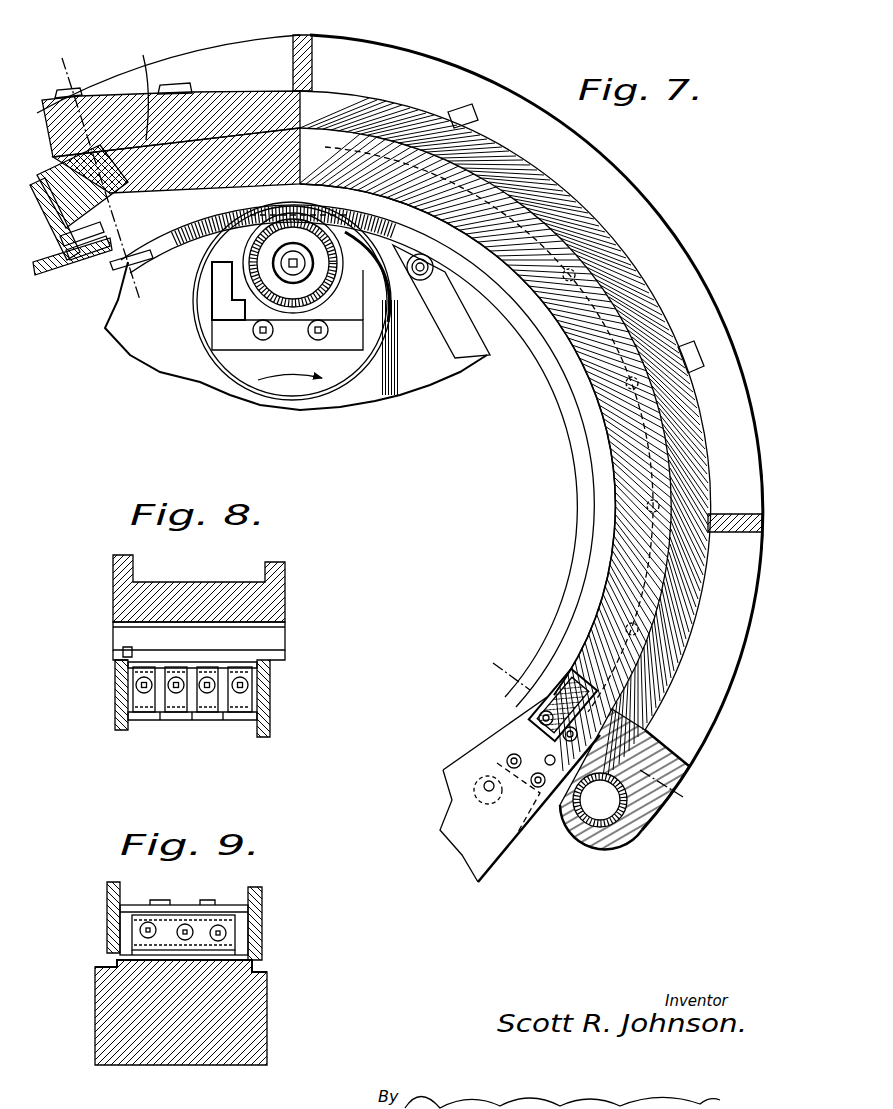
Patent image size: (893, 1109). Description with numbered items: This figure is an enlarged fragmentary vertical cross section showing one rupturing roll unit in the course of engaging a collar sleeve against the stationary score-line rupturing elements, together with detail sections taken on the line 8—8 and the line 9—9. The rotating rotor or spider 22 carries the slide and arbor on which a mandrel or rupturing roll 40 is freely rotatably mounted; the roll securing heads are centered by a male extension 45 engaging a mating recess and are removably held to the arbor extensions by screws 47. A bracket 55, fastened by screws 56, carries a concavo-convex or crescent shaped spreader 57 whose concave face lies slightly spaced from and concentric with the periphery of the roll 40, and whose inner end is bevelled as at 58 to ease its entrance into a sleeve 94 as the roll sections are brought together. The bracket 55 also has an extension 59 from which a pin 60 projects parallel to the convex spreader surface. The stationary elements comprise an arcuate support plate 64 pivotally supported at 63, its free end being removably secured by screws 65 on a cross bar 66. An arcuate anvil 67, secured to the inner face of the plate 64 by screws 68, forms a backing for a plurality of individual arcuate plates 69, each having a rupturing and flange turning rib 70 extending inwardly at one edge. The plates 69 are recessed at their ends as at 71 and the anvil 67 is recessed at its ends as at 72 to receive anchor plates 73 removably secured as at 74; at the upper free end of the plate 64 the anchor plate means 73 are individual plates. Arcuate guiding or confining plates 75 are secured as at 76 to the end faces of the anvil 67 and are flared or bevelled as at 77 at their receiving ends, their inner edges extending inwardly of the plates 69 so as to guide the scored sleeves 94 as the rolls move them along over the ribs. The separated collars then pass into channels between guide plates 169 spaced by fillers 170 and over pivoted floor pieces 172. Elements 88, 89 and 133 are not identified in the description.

In FIG. 7, the section line 8— 8 is at (75, 72).
In FIG. 7, the section line 9— 9 is at (500, 672).
In FIG. 7, the rotor or spider 22 is at (392, 325).
In FIG. 7, the mandrel or rupturing roll 40 is at (240, 298).
In FIG. 7, the male extension 45 is at (292, 280).
In FIG. 7, the screws 47 is at (303, 270).
In FIG. 7, the bracket 55 is at (255, 335).
In FIG. 7, the screws 56 is at (270, 345).
In FIG. 7, the spreader 57 is at (385, 215).
In FIG. 7, the bevel 58 is at (448, 115).
In FIG. 7, the extension 59 is at (442, 278).
In FIG. 7, the pin 60 is at (428, 272).
In FIG. 7, the pivotal support 63 is at (606, 812).
In FIG. 7, the arcuate support plate 64 is at (605, 258).
In FIG. 8, the arcuate support plate 64 is at (257, 598).
In FIG. 9, the arcuate support plate 64 is at (100, 983).
In FIG. 7, the screws 65 is at (60, 105).
In FIG. 7, the cross bar 66 is at (58, 170).
In FIG. 7, the arcuate anvil 67 is at (587, 312).
In FIG. 8, the arcuate anvil 67 is at (247, 655).
In FIG. 9, the arcuate anvil 67 is at (190, 960).
In FIG. 7, the screws 68 is at (180, 86).
In FIG. 7, the arcuate plates 69 is at (302, 128).
In FIG. 9, the arcuate plates 69 is at (130, 902).
In FIG. 7, the rupturing and flange turning rib 70 is at (590, 473).
In FIG. 8, the rupturing and flange turning rib 70 is at (222, 716).
In FIG. 9, the rupturing and flange turning rib 70 is at (216, 900).
In FIG. 7, the recess 71 is at (180, 240).
In FIG. 8, the recess 71 is at (133, 698).
In FIG. 9, the recess 71 is at (167, 908).
In FIG. 7, the recess 72 is at (686, 655).
In FIG. 8, the recess 72 is at (152, 663).
In FIG. 9, the recess 72 is at (150, 948).
In FIG. 7, the anchor plates 73 is at (78, 252).
In FIG. 8, the anchor plates 73 is at (150, 710).
In FIG. 9, the anchor plates 73 is at (233, 930).
In FIG. 7, the securing means 74 is at (110, 262).
In FIG. 8, the securing means 74 is at (247, 684).
In FIG. 9, the securing means 74 is at (213, 943).
In FIG. 7, the arcuate guiding or confining plates 75 is at (573, 446).
In FIG. 8, the arcuate guiding or confining plates 75 is at (118, 703).
In FIG. 9, the arcuate guiding or confining plates 75 is at (248, 922).
In FIG. 7, the securing means 76 is at (583, 367).
In FIG. 7, the flare or bevel 77 is at (120, 275).
In FIG. 7, the bar 88 is at (55, 262).
In FIG. 7, the strip 89 is at (98, 262).
In FIG. 7, the scored collar sleeve 94 is at (262, 395).
In FIG. 7, the frame 133 is at (468, 840).
In FIG. 7, the guide plates 169 is at (458, 770).
In FIG. 7, the fillers 170 is at (518, 830).
In FIG. 7, the floor pieces 172 is at (483, 793).